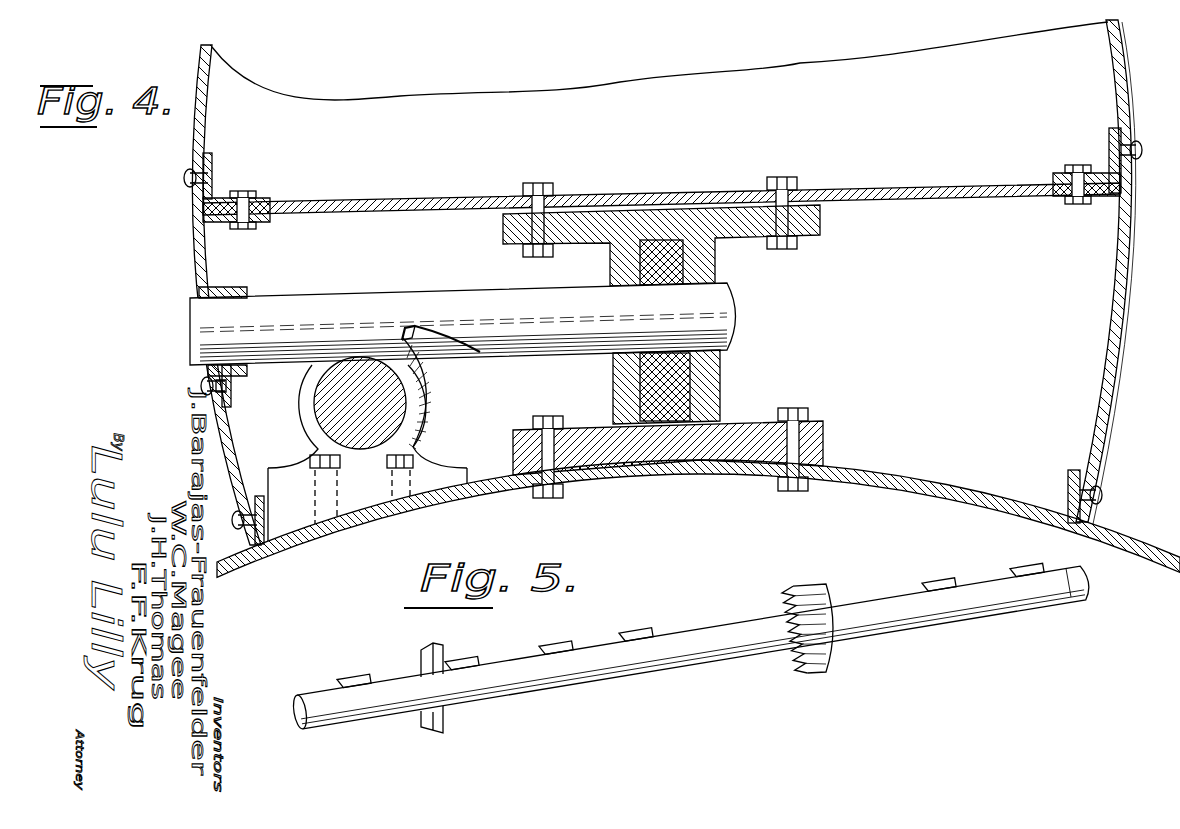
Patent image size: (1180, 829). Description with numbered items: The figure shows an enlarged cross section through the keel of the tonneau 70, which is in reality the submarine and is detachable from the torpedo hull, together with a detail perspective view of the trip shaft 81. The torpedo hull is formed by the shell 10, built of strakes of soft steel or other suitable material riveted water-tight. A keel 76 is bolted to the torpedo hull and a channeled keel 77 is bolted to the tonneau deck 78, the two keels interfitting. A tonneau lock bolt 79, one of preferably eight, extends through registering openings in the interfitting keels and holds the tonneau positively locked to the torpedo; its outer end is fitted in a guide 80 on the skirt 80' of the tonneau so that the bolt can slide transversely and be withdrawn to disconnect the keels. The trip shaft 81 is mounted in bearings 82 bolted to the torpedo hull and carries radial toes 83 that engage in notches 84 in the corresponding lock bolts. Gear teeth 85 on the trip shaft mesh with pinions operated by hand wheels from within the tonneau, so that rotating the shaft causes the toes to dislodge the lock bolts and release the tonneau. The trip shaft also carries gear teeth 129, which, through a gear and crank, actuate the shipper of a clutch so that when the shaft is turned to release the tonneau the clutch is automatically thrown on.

In FIG. 4, the tonneau 70 is at (1122, 108).
In FIG. 4, the tonneau deck 78 is at (880, 196).
In FIG. 4, the channeled keel 77 is at (720, 264).
In FIG. 4, the tonneau lock bolt 79 is at (486, 300).
In FIG. 4, the guide 80 is at (238, 315).
In FIG. 4, the skirt 80' is at (246, 407).
In FIG. 4, the bearing 82 is at (310, 432).
In FIG. 4, the trip shaft 81 is at (405, 400).
In FIG. 5, the trip shaft 81 is at (710, 636).
In FIG. 4, the radial toe 83 is at (412, 367).
In FIG. 5, the radial toe 83 is at (550, 650).
In FIG. 4, the notch 84 is at (424, 324).
In FIG. 4, the keel 76 is at (748, 430).
In FIG. 4, the shell 10 is at (970, 500).
In FIG. 5, the gear teeth 85 is at (424, 662).
In FIG. 5, the gear teeth 129 is at (803, 593).